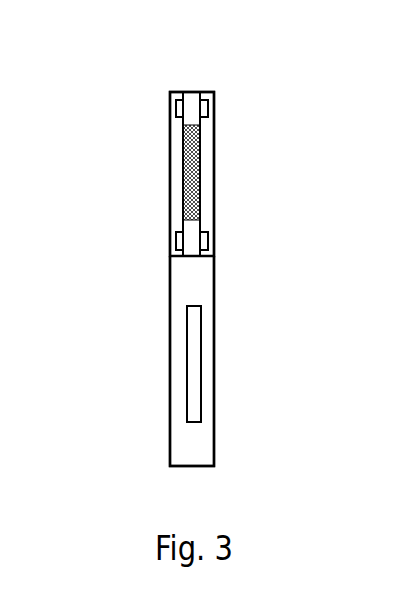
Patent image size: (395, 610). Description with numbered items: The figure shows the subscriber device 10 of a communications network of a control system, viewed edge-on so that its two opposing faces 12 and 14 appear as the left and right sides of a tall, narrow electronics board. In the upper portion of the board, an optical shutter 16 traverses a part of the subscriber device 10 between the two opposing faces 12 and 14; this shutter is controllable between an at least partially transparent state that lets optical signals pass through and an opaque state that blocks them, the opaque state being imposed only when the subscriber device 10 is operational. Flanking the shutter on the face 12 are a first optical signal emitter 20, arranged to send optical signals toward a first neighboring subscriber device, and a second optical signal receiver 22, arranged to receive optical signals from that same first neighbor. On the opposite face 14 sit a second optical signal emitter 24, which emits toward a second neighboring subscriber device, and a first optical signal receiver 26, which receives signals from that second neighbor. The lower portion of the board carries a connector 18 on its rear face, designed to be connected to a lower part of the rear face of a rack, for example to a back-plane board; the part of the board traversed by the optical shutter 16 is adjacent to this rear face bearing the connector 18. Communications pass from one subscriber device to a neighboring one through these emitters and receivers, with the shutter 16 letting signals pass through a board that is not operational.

The subscriber device 10 is at (156, 66).
The face 12 is at (146, 298).
The face 14 is at (240, 298).
The optical shutter 16 is at (201, 167).
The connector 18 is at (201, 360).
The first optical signal emitter 20 is at (176, 108).
The second optical signal receiver 22 is at (176, 238).
The second optical signal emitter 24 is at (208, 108).
The first optical signal receiver 26 is at (208, 238).